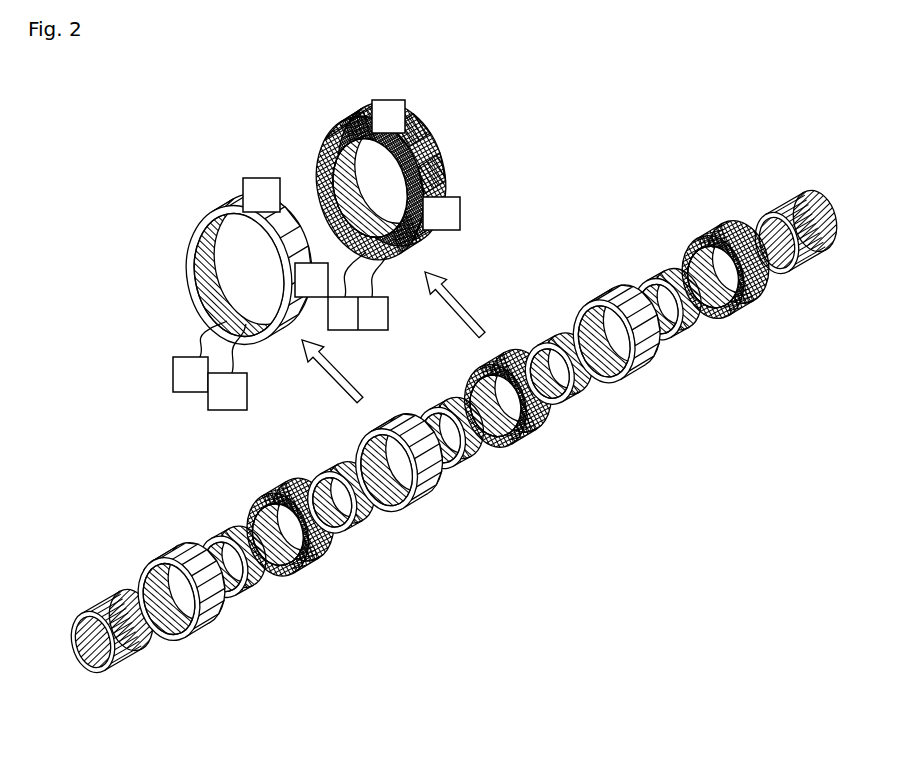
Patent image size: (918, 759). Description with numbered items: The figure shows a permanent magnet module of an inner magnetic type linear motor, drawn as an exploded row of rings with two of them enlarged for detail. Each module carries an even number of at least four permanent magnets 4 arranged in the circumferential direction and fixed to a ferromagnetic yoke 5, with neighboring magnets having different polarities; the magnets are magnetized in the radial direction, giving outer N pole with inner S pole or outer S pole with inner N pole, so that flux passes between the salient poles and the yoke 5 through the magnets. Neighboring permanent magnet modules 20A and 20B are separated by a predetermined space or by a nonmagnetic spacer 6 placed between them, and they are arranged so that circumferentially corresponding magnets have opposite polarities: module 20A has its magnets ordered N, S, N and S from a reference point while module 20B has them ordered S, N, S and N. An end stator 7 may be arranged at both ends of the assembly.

The permanent magnet 4 is at (447, 190).
The yoke 5 is at (218, 263).
The nonmagnetic spacer 6 is at (373, 537).
The end stator 7 is at (140, 655).
The permanent magnet module 20A is at (198, 198).
The permanent magnet module 20B is at (312, 149).